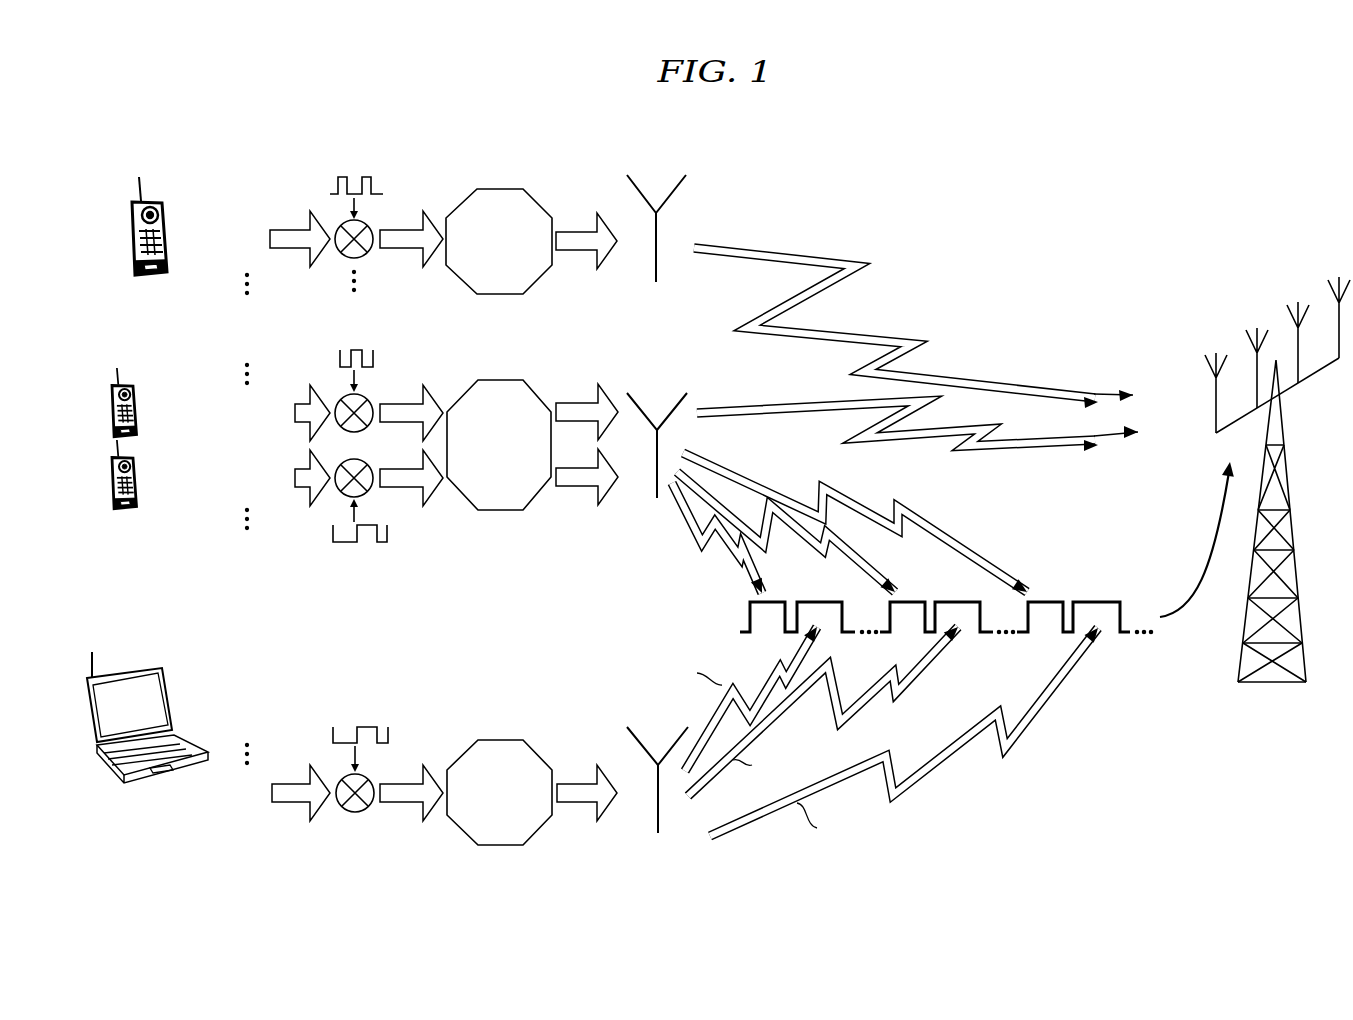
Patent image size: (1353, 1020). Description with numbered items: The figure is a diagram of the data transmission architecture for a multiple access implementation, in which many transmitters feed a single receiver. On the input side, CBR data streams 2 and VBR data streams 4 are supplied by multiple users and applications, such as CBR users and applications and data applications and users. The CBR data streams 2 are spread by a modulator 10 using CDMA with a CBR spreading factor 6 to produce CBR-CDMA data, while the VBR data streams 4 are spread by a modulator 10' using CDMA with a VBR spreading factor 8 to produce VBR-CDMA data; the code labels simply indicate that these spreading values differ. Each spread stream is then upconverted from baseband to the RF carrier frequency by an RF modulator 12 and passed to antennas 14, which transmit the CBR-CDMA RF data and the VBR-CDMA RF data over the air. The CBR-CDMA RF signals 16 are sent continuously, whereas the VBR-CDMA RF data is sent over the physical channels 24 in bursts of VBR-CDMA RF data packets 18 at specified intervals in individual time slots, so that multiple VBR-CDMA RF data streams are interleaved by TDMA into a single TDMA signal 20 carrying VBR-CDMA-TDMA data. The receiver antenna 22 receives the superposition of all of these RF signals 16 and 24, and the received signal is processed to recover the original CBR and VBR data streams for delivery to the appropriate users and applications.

The CBR data streams 2 is at (218, 242).
The VBR data streams 4 is at (195, 479).
The CBR spreading factor 6 is at (322, 163).
The VBR spreading factor 8 is at (310, 586).
The modulator 10 is at (384, 305).
The modulator 10' is at (386, 658).
The RF modulator 12 is at (499, 189).
The antennas 14 is at (652, 283).
The CBR-CDMA RF signals 16 is at (780, 343).
The VBR-CDMA RF data packets 18 is at (690, 532).
The TDMA signal 20 is at (642, 617).
The receiver antenna 22 is at (1232, 683).
The physical channels 24 is at (1213, 538).